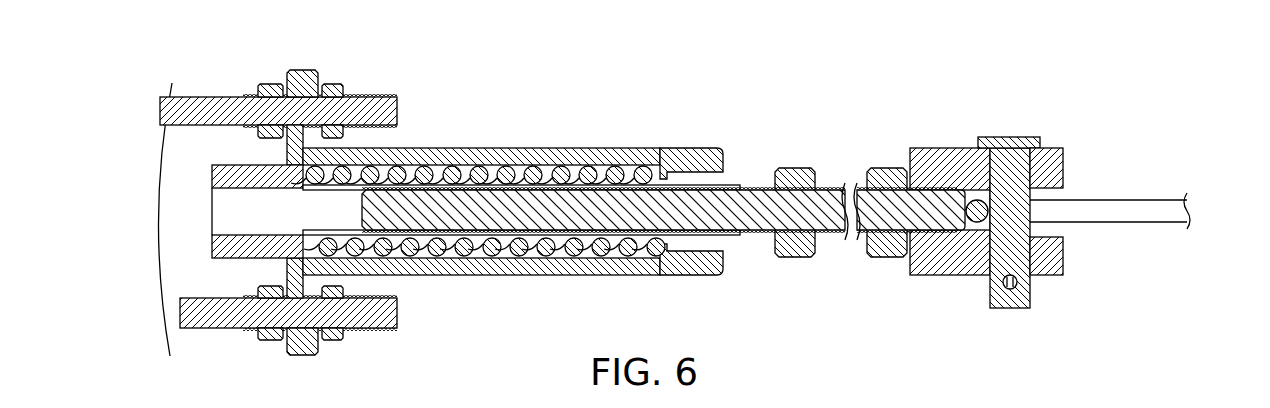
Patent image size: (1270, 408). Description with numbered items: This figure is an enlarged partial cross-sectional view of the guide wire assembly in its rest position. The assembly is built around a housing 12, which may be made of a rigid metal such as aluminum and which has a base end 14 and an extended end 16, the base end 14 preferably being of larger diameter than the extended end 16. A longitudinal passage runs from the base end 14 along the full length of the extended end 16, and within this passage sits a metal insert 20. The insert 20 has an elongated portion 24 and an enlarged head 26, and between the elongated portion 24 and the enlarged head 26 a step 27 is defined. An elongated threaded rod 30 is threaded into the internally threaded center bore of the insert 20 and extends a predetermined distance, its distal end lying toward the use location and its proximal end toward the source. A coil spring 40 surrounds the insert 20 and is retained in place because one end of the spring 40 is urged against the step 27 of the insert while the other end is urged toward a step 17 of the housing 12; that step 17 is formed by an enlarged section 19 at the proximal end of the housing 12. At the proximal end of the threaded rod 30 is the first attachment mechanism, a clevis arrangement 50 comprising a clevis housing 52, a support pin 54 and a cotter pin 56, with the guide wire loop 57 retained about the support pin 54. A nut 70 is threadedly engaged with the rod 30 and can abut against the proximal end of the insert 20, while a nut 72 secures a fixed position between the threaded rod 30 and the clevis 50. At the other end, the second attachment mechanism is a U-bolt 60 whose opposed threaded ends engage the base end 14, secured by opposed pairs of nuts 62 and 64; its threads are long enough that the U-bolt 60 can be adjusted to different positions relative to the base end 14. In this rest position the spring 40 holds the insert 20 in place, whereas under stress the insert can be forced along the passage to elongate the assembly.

The housing 12 is at (508, 202).
The base end 14 is at (308, 62).
The extended end 16 is at (492, 148).
The step 17 is at (657, 150).
The enlarged section 19 is at (705, 277).
The metal insert 20 is at (454, 182).
The elongated portion 24 is at (683, 252).
The enlarged head 26 is at (237, 258).
The step 27 is at (320, 278).
The threaded rod 30 is at (750, 224).
The coil spring 40 is at (490, 257).
The clevis arrangement 50 is at (991, 219).
The clevis housing 52 is at (944, 160).
The support pin 54 is at (1012, 145).
The cotter pin 56 is at (1018, 283).
The guide wire loop 57 is at (1090, 205).
The U-bolt 60 is at (212, 332).
The nuts 62 is at (333, 84).
The nuts 64 is at (275, 84).
The nut 70 is at (795, 168).
The nut 72 is at (887, 168).